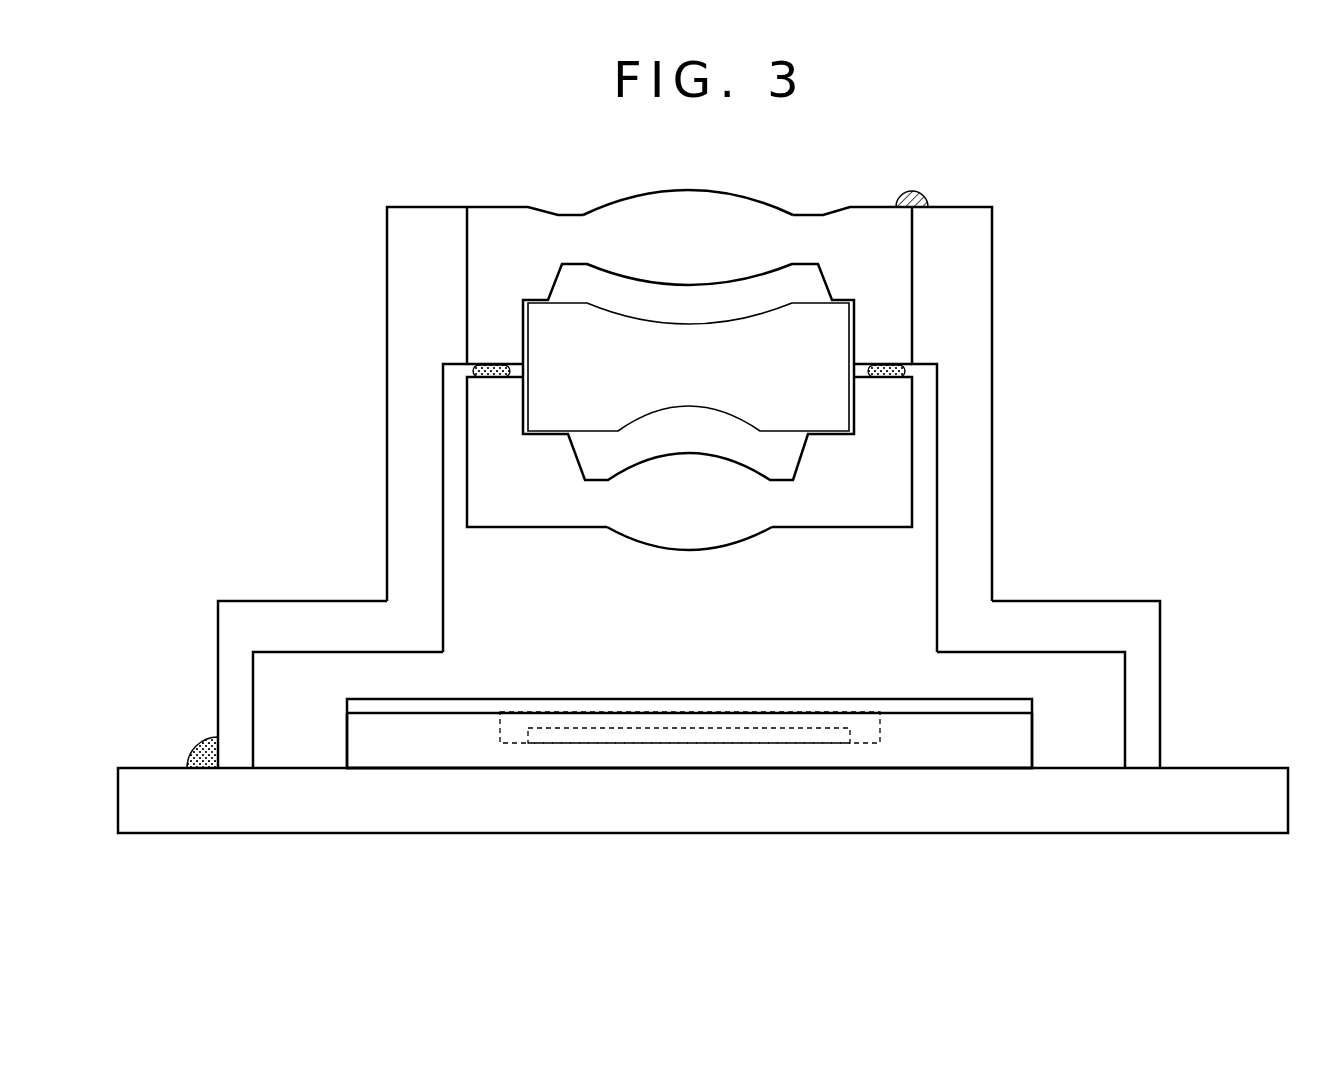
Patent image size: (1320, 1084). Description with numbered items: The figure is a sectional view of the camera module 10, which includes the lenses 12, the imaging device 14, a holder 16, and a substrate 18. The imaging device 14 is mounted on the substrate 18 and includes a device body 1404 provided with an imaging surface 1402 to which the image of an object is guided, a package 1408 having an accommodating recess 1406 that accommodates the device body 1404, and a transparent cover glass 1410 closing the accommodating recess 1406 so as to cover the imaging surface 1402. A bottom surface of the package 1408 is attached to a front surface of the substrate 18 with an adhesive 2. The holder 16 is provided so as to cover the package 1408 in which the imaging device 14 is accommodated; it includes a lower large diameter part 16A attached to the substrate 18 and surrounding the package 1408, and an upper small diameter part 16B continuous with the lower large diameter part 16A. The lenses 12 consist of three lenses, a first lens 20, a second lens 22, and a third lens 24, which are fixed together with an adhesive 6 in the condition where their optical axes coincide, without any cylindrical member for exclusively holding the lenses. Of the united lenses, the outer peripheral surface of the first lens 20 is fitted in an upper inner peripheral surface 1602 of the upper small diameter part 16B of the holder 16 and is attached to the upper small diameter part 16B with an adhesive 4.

The camera module 10 is at (215, 188).
The lenses 12 is at (763, 189).
The imaging device 14 is at (399, 679).
The holder 16 is at (1004, 259).
The lower large diameter part 16A is at (1160, 662).
The upper small diameter part 16B is at (992, 303).
The upper inner peripheral surface 1602 is at (912, 262).
The substrate 18 is at (302, 833).
The first lens 20 is at (613, 200).
The second lens 22 is at (610, 308).
The third lens 24 is at (623, 537).
The adhesive 2 is at (193, 750).
The adhesive 4 is at (932, 202).
The adhesive 6 is at (905, 371).
The imaging surface 1402 is at (800, 728).
The device body 1404 is at (695, 735).
The accommodating recess 1406 is at (520, 743).
The package 1408 is at (363, 747).
The cover glass 1410 is at (920, 697).